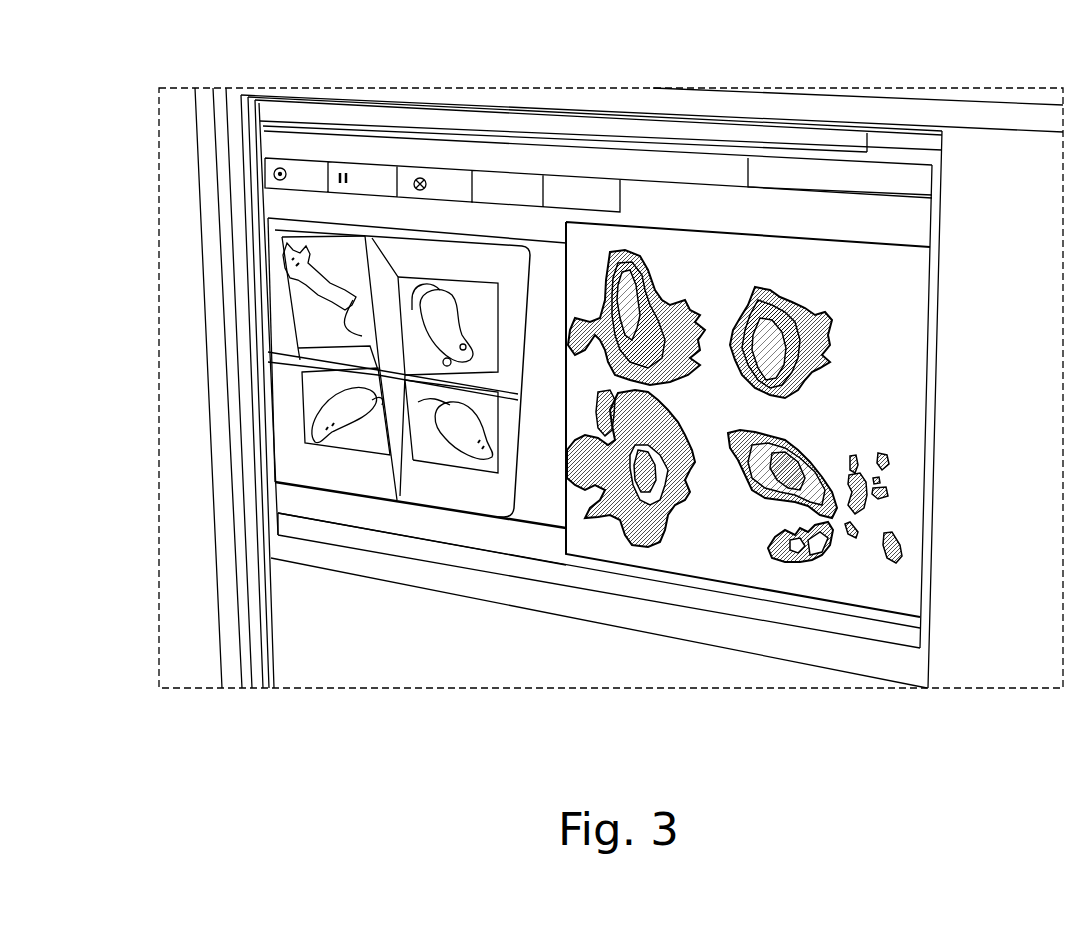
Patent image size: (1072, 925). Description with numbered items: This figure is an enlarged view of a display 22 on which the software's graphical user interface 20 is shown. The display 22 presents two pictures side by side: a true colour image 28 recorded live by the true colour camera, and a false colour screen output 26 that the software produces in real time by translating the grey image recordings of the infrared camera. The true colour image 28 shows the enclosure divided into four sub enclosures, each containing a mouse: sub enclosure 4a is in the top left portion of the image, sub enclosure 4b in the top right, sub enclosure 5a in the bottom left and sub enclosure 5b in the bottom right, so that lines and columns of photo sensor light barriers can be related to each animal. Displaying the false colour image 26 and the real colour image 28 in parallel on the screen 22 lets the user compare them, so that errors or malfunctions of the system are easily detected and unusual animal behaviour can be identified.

The graphical user interface 20 is at (775, 213).
The display 22 is at (222, 380).
The sub enclosure 4a is at (323, 315).
The sub enclosure 4b is at (473, 312).
The sub enclosure 5a is at (310, 420).
The sub enclosure 5b is at (447, 444).
The false colour screen output 26 is at (820, 567).
The true colour image 28 is at (348, 505).